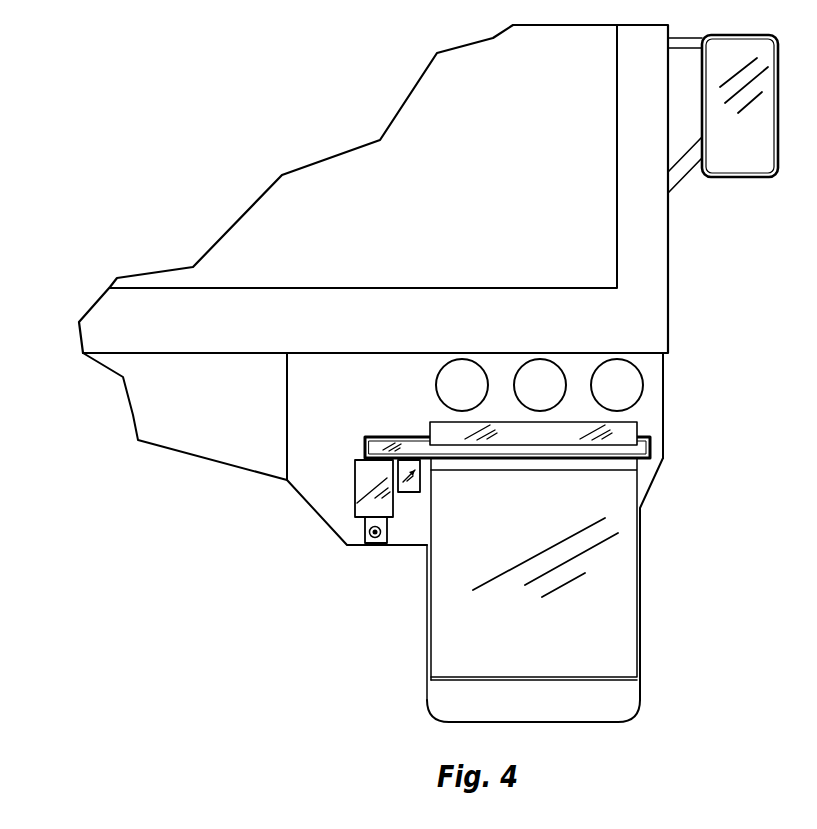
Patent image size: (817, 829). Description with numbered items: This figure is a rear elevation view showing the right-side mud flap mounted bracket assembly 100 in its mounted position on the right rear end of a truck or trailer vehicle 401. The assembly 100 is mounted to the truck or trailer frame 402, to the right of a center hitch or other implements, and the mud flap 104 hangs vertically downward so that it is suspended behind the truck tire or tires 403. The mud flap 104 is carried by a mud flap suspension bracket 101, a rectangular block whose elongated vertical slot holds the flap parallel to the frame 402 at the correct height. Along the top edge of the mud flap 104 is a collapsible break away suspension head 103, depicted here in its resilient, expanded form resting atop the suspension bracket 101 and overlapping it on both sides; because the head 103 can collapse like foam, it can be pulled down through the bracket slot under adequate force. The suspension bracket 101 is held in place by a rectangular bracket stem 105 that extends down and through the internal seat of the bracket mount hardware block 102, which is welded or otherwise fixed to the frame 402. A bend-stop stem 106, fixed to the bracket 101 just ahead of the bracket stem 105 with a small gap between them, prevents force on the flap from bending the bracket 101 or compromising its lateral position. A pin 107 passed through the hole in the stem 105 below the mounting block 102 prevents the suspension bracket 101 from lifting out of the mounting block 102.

The mud flap mounted bracket assembly 100 is at (647, 568).
The mud flap suspension bracket 101 is at (649, 452).
The bracket mount hardware block 102 is at (352, 475).
The break away suspension head 103 is at (446, 432).
The mud flap 104 is at (468, 655).
The bracket stem 105 is at (387, 528).
The bend-stop stem 106 is at (422, 482).
The pinning hardware 107 is at (365, 529).
The truck or trailer vehicle 401 is at (195, 212).
The truck or trailer frame 402 is at (312, 430).
The truck tire or tires 403 is at (427, 690).